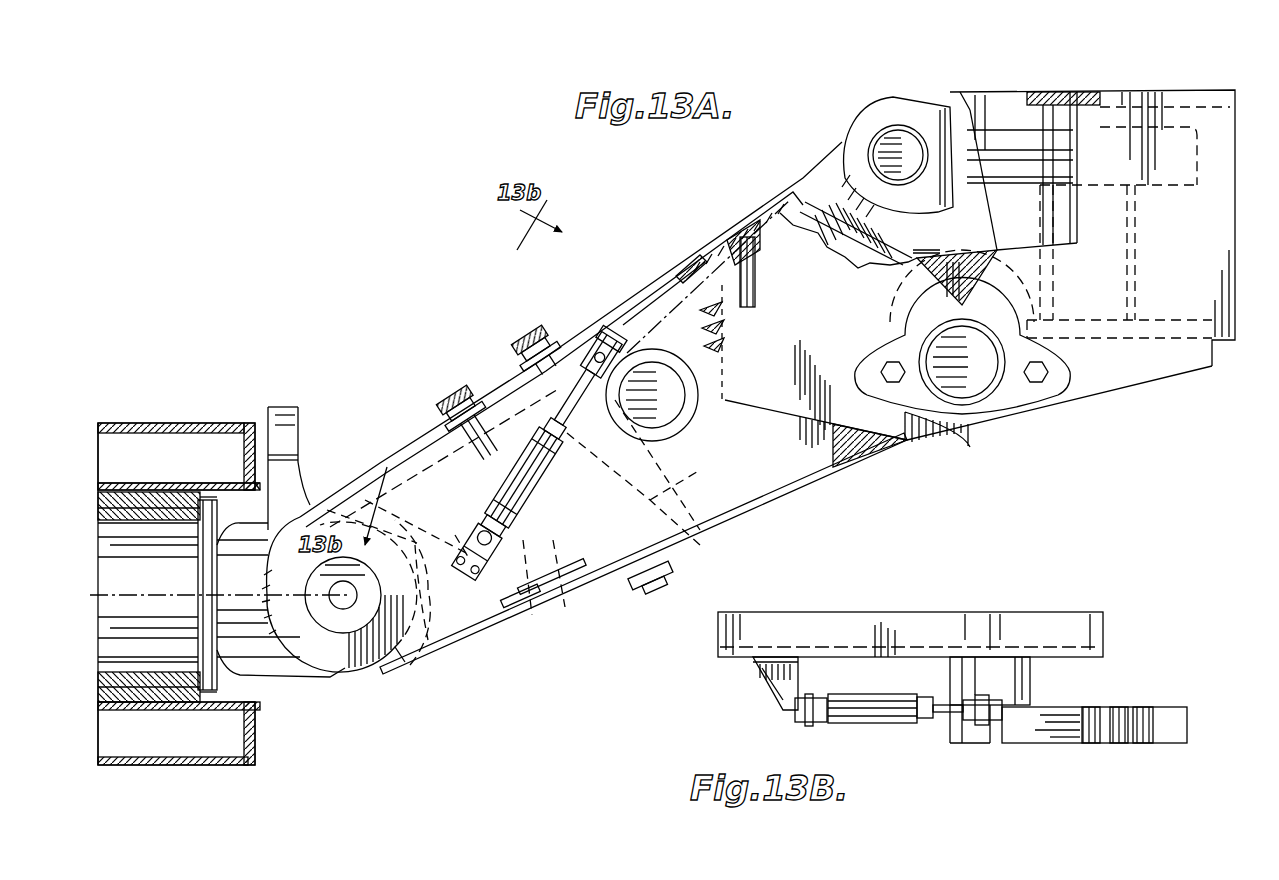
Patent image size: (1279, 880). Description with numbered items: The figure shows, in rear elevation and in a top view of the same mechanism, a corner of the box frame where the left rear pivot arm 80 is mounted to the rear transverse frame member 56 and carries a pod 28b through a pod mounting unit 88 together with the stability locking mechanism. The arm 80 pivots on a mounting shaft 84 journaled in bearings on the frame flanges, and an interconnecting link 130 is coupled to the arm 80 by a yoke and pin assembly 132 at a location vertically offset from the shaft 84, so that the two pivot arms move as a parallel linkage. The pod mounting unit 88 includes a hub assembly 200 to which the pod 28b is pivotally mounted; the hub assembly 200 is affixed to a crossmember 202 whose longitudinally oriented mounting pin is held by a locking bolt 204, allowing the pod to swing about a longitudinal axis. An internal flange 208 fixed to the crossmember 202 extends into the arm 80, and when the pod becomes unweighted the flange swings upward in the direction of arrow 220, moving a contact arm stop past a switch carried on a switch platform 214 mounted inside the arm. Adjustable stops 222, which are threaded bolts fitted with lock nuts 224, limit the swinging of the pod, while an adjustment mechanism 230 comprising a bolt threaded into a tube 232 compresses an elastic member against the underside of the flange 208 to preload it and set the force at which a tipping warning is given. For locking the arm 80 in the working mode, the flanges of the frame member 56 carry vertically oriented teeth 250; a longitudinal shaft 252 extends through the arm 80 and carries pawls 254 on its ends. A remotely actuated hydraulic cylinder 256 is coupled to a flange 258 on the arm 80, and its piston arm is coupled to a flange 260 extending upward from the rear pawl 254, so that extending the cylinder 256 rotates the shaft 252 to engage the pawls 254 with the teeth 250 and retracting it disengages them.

In FIG. 13A, the pod 28b is at (160, 423).
In FIG. 13A, the hub assembly 200 is at (133, 523).
In FIG. 13A, the pod mounting unit 88 is at (88, 656).
In FIG. 13A, the locking bolt 204 is at (340, 600).
In FIG. 13A, the crossmember 202 is at (358, 680).
In FIG. 13A, the internal flange 208 is at (437, 559).
In FIG. 13A, the switch platform 214 is at (542, 603).
In FIG. 13A, the tube 232 is at (660, 494).
In FIG. 13A, the lock nuts 224 is at (515, 357).
In FIG. 13A, the adjustable stops 222 is at (520, 335).
In FIG. 13A, the hydraulic cylinder 256 is at (592, 585).
In FIG. 13B, the hydraulic cylinder 256 is at (872, 715).
In FIG. 13A, the flange 258 is at (488, 580).
In FIG. 13B, the flange 258 is at (790, 718).
In FIG. 13A, the flange 260 is at (602, 352).
In FIG. 13B, the flange 260 is at (990, 725).
In FIG. 13A, the arrow 220 is at (620, 440).
In FIG. 13A, the shaft 252 is at (698, 418).
In FIG. 13A, the pawls 254 is at (684, 335).
In FIG. 13B, the pawls 254 is at (1062, 728).
In FIG. 13A, the teeth 250 is at (718, 307).
In FIG. 13B, the teeth 250 is at (1115, 715).
In FIG. 13A, the pivot arm 80 is at (757, 507).
In FIG. 13B, the pivot arm 80 is at (920, 612).
In FIG. 13A, the adjustment mechanism 230 is at (660, 572).
In FIG. 13A, the shaft 84 is at (970, 378).
In FIG. 13A, the yoke and pin assembly 132 is at (872, 120).
In FIG. 13A, the rear transverse frame member 56 is at (1183, 84).
In FIG. 13A, the interconnecting link 130 is at (1003, 137).